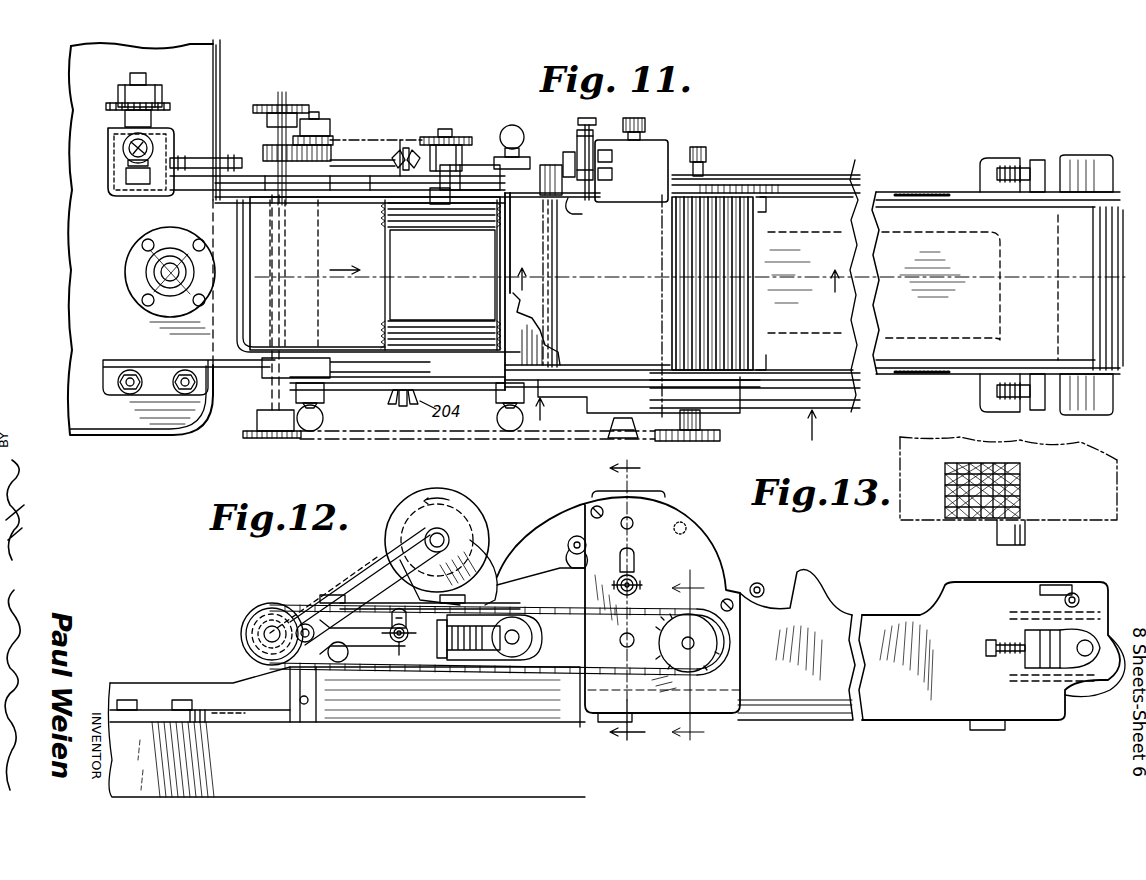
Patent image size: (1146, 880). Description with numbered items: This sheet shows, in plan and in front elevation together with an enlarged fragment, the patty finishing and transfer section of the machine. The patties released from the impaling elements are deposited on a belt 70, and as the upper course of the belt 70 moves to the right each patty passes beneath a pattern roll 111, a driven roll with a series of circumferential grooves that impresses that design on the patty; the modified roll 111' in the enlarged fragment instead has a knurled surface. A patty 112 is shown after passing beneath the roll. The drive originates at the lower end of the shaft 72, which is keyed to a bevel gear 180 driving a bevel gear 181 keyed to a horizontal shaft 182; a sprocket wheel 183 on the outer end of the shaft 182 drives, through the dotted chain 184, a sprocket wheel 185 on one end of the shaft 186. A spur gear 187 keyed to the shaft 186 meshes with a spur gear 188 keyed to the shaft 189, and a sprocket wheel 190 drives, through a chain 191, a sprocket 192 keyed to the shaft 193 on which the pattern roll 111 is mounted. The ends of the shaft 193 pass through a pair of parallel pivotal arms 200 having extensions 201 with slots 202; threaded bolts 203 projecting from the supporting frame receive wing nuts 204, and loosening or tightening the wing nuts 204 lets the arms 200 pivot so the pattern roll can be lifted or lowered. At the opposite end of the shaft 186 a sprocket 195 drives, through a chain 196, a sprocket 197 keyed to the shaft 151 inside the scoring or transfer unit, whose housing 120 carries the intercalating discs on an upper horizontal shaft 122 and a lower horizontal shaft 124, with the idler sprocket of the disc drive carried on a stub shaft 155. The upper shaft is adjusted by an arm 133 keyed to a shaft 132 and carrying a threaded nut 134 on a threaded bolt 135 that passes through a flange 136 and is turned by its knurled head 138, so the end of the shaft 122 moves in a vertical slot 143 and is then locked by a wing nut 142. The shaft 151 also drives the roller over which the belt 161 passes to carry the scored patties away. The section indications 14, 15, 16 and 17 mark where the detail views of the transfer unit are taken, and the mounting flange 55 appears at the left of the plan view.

In FIG. 11, the section line 14- 14 is at (689, 419).
In FIG. 11, the section line 15- 15 is at (679, 268).
In FIG. 12, the section line 16- 16 is at (616, 606).
In FIG. 12, the section line 17- 17 is at (690, 660).
In FIG. 11, the hub 55 is at (162, 270).
In FIG. 11, the belt 70 is at (687, 273).
In FIG. 11, the shaft 72 is at (126, 142).
In FIG. 11, the pattern roll 111 is at (425, 275).
In FIG. 12, the pattern roll 111 is at (454, 540).
In FIG. 13, the knurled pattern roll 111' is at (1008, 493).
In FIG. 12, the patty 112 is at (462, 606).
In FIG. 11, the housing 120 is at (700, 278).
In FIG. 12, the housing 120 is at (685, 527).
In FIG. 11, the upper horizontal shaft 122 is at (608, 430).
In FIG. 12, the upper horizontal shaft 122 is at (634, 592).
In FIG. 12, the lower horizontal shaft 124 is at (622, 645).
In FIG. 11, the shaft 132 is at (586, 142).
In FIG. 12, the shaft 132 is at (572, 576).
In FIG. 11, the arm 133 is at (590, 180).
In FIG. 11, the threaded nut 134 is at (577, 150).
In FIG. 11, the threaded bolt 135 is at (592, 160).
In FIG. 11, the flange 136 is at (570, 208).
In FIG. 11, the knurled head 138 is at (560, 166).
In FIG. 12, the wing nut 142 is at (637, 580).
In FIG. 12, the vertical slot 143 is at (636, 556).
In FIG. 12, the shaft 151 is at (696, 643).
In FIG. 12, the stub shaft 155 is at (633, 522).
In FIG. 12, the belt 161 is at (819, 612).
In FIG. 11, the bevel gear 180 is at (123, 150).
In FIG. 11, the bevel gear 181 is at (126, 176).
In FIG. 11, the horizontal shaft 182 is at (142, 78).
In FIG. 11, the sprocket wheel 183 is at (162, 95).
In FIG. 11, the chain 184 is at (228, 105).
In FIG. 11, the sprocket wheel 185 is at (297, 114).
In FIG. 11, the shaft 186 is at (281, 104).
In FIG. 12, the shaft 186 is at (266, 638).
In FIG. 11, the spur gear 187 is at (262, 150).
In FIG. 12, the spur gear 187 is at (240, 633).
In FIG. 11, the spur gear 188 is at (346, 145).
In FIG. 11, the shaft 189 is at (315, 113).
In FIG. 11, the sprocket wheel 190 is at (334, 138).
In FIG. 11, the chain 191 is at (401, 135).
In FIG. 12, the chain 191 is at (356, 565).
In FIG. 11, the sprocket 192 is at (463, 142).
In FIG. 11, the shaft 193 is at (444, 129).
In FIG. 12, the shaft 193 is at (450, 542).
In FIG. 11, the sprocket 195 is at (268, 438).
In FIG. 12, the sprocket 195 is at (248, 622).
In FIG. 11, the chain 196 is at (382, 440).
In FIG. 12, the chain 196 is at (270, 604).
In FIG. 11, the sprocket 197 is at (700, 442).
In FIG. 12, the sprocket 197 is at (690, 666).
In FIG. 12, the pivotal arms 200 is at (352, 592).
In FIG. 12, the extension 201 is at (347, 620).
In FIG. 12, the slot 202 is at (408, 621).
In FIG. 11, the threaded bolt 203 is at (396, 404).
In FIG. 12, the threaded bolt 203 is at (435, 697).
In FIG. 11, the wing nut 204 is at (400, 150).
In FIG. 12, the wing nut 204 is at (394, 637).